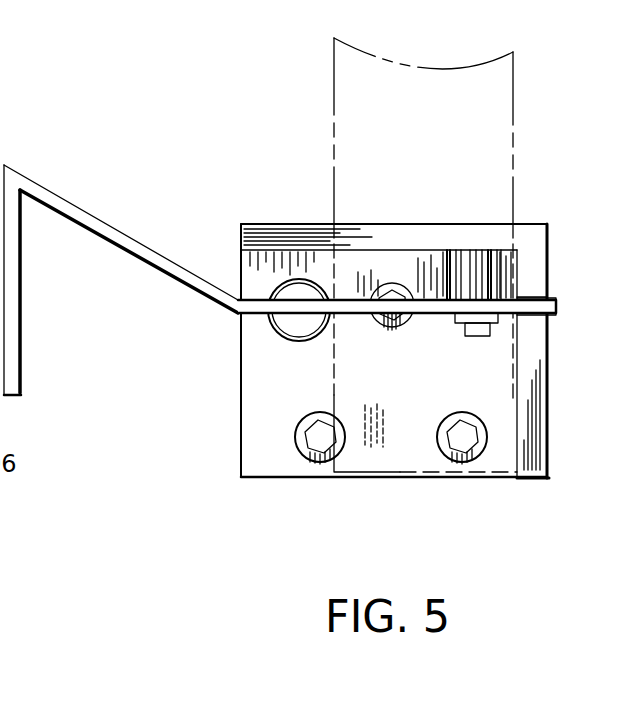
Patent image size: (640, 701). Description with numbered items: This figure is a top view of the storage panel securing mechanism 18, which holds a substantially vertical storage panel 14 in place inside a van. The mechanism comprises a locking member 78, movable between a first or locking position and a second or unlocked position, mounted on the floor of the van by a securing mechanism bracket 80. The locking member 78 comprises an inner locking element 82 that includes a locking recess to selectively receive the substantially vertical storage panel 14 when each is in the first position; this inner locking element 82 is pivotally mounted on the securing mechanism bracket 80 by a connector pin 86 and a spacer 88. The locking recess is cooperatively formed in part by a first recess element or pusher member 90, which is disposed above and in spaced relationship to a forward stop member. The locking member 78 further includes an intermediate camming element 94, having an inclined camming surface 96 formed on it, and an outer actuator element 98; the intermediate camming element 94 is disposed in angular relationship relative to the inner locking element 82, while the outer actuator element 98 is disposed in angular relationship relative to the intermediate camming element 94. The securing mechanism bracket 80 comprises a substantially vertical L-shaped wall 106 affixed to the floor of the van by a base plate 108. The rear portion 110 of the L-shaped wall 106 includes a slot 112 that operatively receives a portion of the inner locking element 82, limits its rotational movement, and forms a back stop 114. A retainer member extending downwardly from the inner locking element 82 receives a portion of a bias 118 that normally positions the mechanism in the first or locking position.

The substantially vertical storage panel 14 is at (398, 45).
The storage panel securing mechanism 18 is at (278, 100).
The locking member 78 is at (198, 345).
The securing mechanism bracket 80 is at (250, 488).
The inner locking element 82 is at (358, 347).
The connector pin 86 is at (487, 336).
The spacer 88 is at (462, 253).
The pusher member 90 is at (556, 316).
The intermediate camming element 94 is at (118, 138).
The inclined camming surface 96 is at (70, 195).
The outer actuator element 98 is at (35, 302).
The substantially vertical L-shaped wall 106 is at (312, 185).
The base plate 108 is at (490, 462).
The rear portion 110 is at (545, 411).
The slot 112 is at (527, 290).
The back stop 114 is at (517, 392).
The bias 118 is at (320, 342).